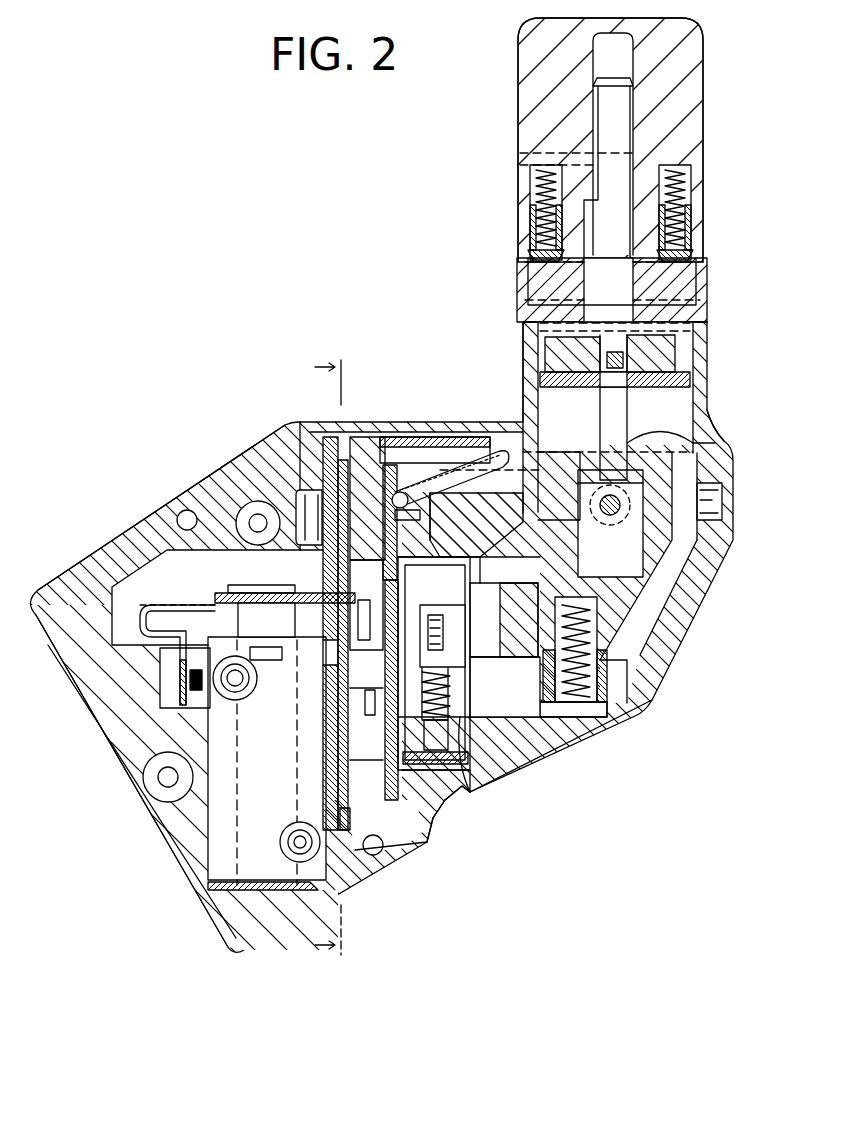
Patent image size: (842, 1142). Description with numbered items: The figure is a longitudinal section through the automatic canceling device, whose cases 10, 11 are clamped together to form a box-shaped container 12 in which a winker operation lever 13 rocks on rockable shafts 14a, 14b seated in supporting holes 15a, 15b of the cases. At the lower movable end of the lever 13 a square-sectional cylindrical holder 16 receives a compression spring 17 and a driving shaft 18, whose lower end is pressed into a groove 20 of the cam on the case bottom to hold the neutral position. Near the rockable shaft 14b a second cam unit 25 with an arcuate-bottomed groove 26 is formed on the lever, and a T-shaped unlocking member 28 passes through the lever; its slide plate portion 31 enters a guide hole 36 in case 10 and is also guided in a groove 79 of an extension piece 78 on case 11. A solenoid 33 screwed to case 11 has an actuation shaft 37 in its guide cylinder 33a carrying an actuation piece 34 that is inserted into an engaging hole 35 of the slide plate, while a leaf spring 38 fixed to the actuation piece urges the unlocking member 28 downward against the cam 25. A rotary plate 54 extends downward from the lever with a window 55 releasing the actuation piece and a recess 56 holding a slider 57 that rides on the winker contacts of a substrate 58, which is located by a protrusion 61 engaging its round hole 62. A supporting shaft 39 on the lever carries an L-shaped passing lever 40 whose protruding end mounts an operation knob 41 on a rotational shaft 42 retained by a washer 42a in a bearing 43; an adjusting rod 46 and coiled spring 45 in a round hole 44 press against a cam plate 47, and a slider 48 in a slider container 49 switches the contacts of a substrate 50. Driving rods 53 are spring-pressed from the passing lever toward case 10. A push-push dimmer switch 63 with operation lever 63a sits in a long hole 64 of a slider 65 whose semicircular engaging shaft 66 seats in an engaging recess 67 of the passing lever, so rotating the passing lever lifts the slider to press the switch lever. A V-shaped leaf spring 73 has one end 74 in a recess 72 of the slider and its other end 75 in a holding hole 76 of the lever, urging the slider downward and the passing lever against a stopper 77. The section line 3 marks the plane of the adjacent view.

The section line 3- 3 is at (316, 661).
The case 10 is at (703, 623).
The case 11 is at (268, 436).
The container 12 is at (668, 661).
The winker operation lever 13 is at (655, 623).
The rockable shaft 14a is at (712, 546).
The rockable shaft 14b is at (262, 459).
The supporting hole 15a is at (722, 576).
The supporting hole 15b is at (300, 421).
The cylindrical holder 16 is at (625, 689).
The compression spring 17 is at (620, 716).
The driving shaft 18 is at (605, 719).
The groove 20 is at (600, 741).
The second cam unit 25 is at (328, 441).
The groove 26 is at (360, 441).
The unlocking member 28 is at (332, 736).
The slide plate portion 31 is at (360, 871).
The solenoid 33 is at (200, 871).
The guide cylinder 33a is at (200, 801).
The actuation piece 34 is at (220, 597).
The engaging hole 35 is at (295, 593).
The guide hole 36 is at (348, 861).
The actuation shaft 37 is at (255, 601).
The leaf spring 38 is at (155, 626).
The supporting shaft 39 is at (610, 517).
The passing lever 40 is at (700, 429).
The operation knob 41 is at (700, 58).
The rotational shaft 42 is at (628, 111).
The washer 42a is at (590, 506).
The bearing 43 is at (650, 396).
The round hole 44 is at (540, 179).
The coiled spring 45 is at (545, 206).
The adjusting rod 46 is at (535, 251).
The cam plate 47 is at (680, 286).
The slider 48 is at (640, 359).
The slider container 49 is at (662, 346).
The substrate 50 is at (660, 379).
The driving rod 53 is at (520, 516).
The rotary plate 54 is at (330, 646).
The window 55 is at (340, 573).
The recess 56 is at (380, 721).
The slider 57 is at (382, 856).
The substrate 58 is at (425, 844).
The protrusion 61 is at (390, 469).
The round hole 62 is at (343, 463).
The dimmer switch 63 is at (455, 671).
The operation lever 63a is at (480, 789).
The long hole 64 is at (420, 801).
The slider 65 is at (455, 806).
The engaging shaft 66 is at (520, 441).
The engaging recess 67 is at (488, 554).
The recess 72 is at (480, 448).
The leaf spring 73 is at (430, 471).
The one end 74 is at (445, 471).
The other end 75 is at (398, 511).
The holding hole 76 is at (405, 493).
The stopper 77 is at (520, 726).
The extension piece 78 is at (338, 791).
The groove 79 is at (290, 823).